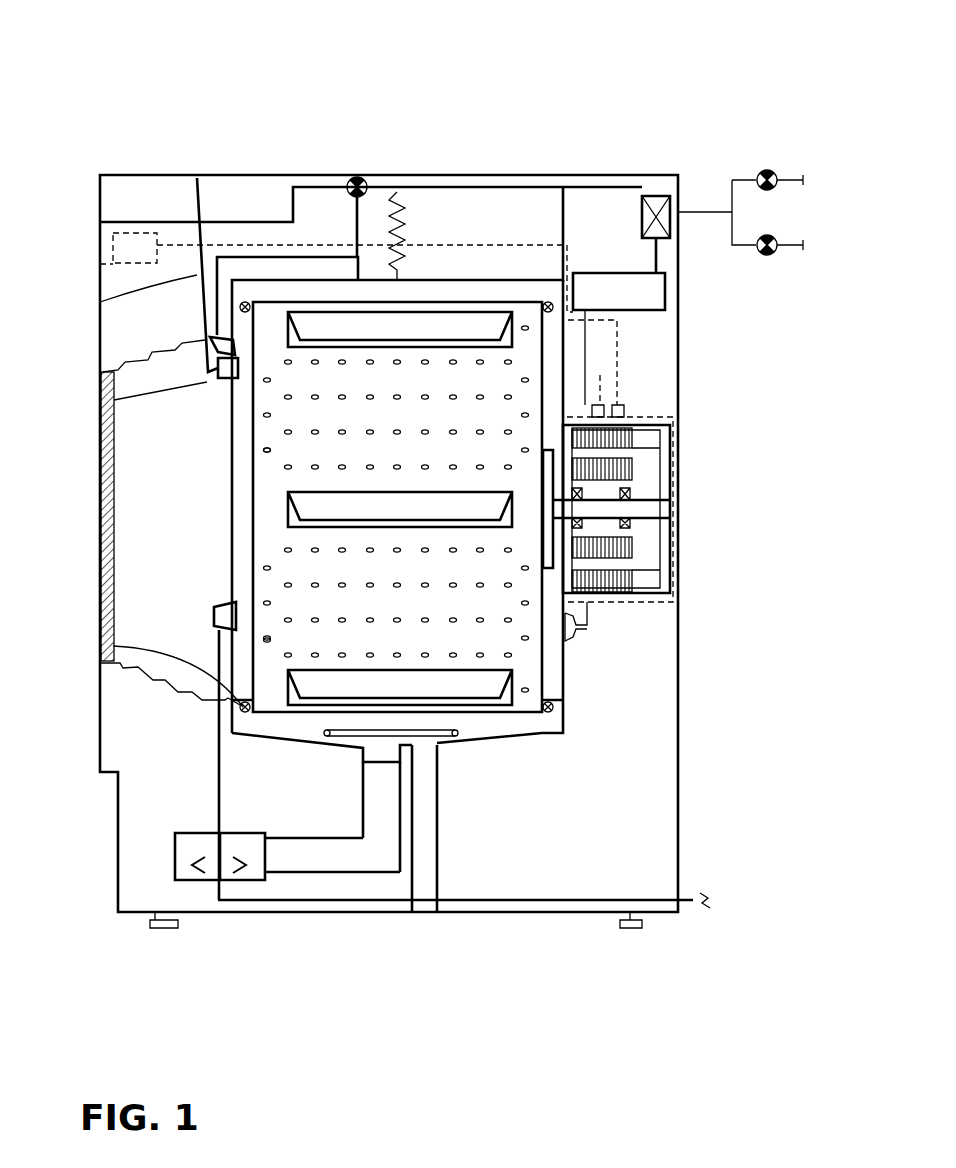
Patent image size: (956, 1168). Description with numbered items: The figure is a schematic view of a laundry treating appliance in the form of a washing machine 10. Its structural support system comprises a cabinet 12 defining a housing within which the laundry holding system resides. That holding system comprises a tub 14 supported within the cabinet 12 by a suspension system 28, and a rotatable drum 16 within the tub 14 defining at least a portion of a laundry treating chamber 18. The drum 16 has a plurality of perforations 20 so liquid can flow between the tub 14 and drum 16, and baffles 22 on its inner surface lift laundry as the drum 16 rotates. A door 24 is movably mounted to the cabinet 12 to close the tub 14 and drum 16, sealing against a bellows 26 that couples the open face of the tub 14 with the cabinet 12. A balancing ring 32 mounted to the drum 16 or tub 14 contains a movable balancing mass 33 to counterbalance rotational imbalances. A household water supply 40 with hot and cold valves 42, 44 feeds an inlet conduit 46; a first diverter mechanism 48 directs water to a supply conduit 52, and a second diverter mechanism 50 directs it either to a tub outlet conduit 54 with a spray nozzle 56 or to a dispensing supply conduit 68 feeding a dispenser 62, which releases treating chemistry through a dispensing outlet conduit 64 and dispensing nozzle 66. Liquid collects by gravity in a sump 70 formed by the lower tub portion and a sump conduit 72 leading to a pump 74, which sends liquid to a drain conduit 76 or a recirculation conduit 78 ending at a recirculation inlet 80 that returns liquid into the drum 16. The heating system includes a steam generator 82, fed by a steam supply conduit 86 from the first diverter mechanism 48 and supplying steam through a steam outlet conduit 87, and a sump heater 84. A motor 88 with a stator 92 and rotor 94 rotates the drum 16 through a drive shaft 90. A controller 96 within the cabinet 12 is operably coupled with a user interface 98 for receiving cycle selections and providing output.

The washing machine 10 is at (625, 30).
The cabinet 12 is at (597, 170).
The tub 14 is at (435, 278).
The drum 16 is at (322, 300).
The laundry treating chamber 18 is at (377, 426).
The perforations 20 is at (512, 395).
The baffles 22 is at (492, 694).
The door 24 is at (97, 500).
The bellows 26 is at (138, 668).
The suspension system 28 is at (397, 190).
The balancing ring 32 is at (242, 300).
The balancing mass 33 is at (240, 298).
The household water supply 40 is at (797, 162).
The hot water valve 42 is at (768, 168).
The cold water valve 44 is at (768, 255).
The inlet conduit 46 is at (706, 210).
The first diverter mechanism 48 is at (659, 194).
The second diverter mechanism 50 is at (355, 176).
The supply conduit 52 is at (522, 186).
The tub outlet conduit 54 is at (277, 240).
The spray nozzle 56 is at (224, 350).
The dispenser 62 is at (233, 197).
The dispensing outlet conduit 64 is at (231, 342).
The dispensing nozzle 66 is at (218, 374).
The dispensing supply conduit 68 is at (335, 184).
The sump 70 is at (443, 750).
The sump conduit 72 is at (377, 850).
The pump 74 is at (200, 886).
The drain conduit 76 is at (690, 905).
The recirculation conduit 78 is at (220, 773).
The recirculation inlet 80 is at (212, 616).
The steam generator 82 is at (667, 292).
The sump heater 84 is at (467, 740).
The steam supply conduit 86 is at (660, 246).
The steam outlet conduit 87 is at (590, 618).
The motor 88 is at (677, 416).
The drive shaft 90 is at (648, 512).
The stator 92 is at (624, 432).
The rotor 94 is at (632, 468).
The controller 96 is at (138, 266).
The user interface 98 is at (96, 243).